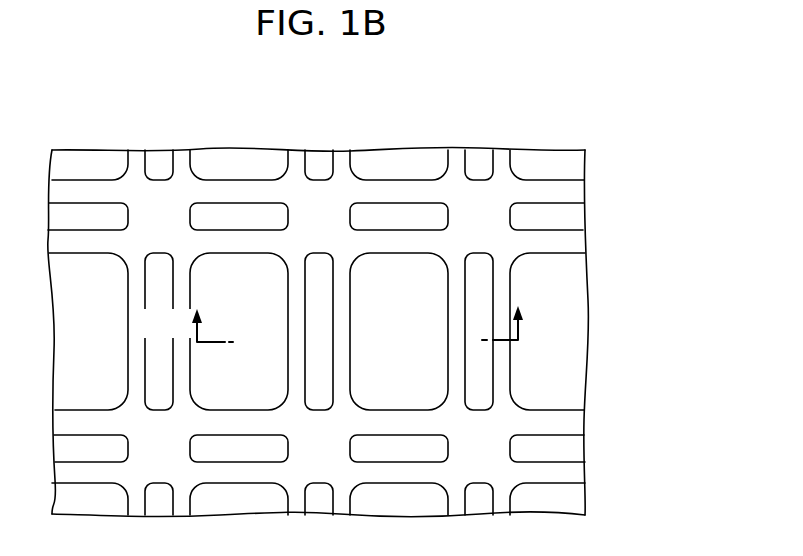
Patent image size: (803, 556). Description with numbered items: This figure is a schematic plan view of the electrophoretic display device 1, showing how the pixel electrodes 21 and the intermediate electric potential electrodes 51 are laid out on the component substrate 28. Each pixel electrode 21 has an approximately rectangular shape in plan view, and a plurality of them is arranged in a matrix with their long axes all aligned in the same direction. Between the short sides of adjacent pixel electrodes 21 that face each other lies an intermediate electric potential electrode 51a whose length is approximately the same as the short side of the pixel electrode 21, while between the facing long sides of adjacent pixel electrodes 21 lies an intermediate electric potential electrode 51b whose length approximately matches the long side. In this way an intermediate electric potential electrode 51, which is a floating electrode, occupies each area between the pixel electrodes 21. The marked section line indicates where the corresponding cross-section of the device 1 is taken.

The electrophoretic display device 1 is at (376, 270).
The component substrate 28 is at (291, 193).
The intermediate electric potential electrode 51 is at (376, 332).
The intermediate electric potential electrode 51a is at (572, 216).
The intermediate electric potential electrode 51b is at (480, 308).
The pixel electrode 21 is at (418, 378).